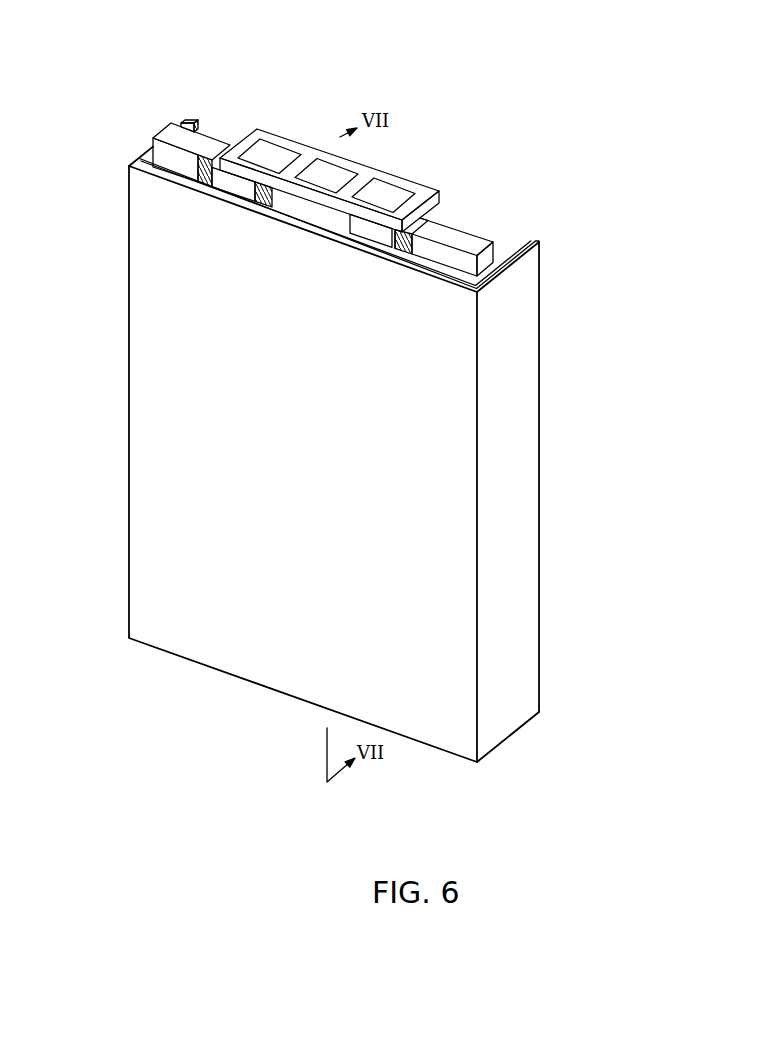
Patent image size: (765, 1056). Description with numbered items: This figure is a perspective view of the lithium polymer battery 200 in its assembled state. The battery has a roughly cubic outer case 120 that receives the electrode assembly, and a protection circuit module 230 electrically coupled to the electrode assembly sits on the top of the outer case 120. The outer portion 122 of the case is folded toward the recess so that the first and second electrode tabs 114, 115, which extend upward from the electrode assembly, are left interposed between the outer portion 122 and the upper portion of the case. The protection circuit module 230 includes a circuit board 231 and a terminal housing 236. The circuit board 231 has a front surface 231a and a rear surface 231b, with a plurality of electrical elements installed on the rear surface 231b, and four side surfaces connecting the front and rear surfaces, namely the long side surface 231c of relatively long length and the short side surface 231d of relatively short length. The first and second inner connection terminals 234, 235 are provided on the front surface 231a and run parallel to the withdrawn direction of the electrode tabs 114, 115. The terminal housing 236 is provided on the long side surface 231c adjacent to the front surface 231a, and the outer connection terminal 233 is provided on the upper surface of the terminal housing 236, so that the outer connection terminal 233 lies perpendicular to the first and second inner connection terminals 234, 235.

The lithium polymer battery 200 is at (153, 25).
The outer case 120 is at (556, 381).
The outer portion 122 is at (255, 655).
The protection circuit module 230 is at (503, 224).
The circuit board 231 is at (139, 127).
The front surface 231a is at (163, 152).
The rear surface 231b is at (210, 131).
The long side surface 231c is at (455, 231).
The short side surface 231d is at (483, 263).
The outer connection terminal 233 is at (388, 184).
The first inner connection terminal 234 is at (405, 250).
The second inner connection terminal 235 is at (263, 206).
The terminal housing 236 is at (340, 154).
The first electrode tab 114 is at (366, 238).
The second electrode tab 115 is at (225, 192).